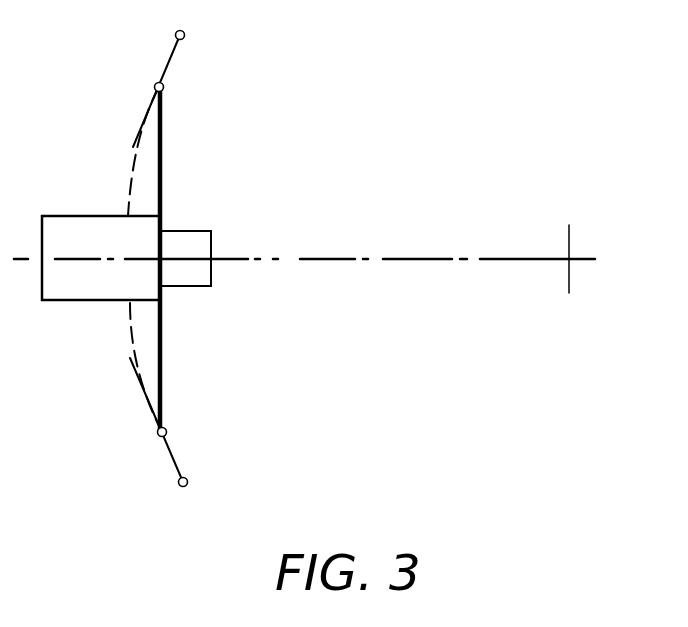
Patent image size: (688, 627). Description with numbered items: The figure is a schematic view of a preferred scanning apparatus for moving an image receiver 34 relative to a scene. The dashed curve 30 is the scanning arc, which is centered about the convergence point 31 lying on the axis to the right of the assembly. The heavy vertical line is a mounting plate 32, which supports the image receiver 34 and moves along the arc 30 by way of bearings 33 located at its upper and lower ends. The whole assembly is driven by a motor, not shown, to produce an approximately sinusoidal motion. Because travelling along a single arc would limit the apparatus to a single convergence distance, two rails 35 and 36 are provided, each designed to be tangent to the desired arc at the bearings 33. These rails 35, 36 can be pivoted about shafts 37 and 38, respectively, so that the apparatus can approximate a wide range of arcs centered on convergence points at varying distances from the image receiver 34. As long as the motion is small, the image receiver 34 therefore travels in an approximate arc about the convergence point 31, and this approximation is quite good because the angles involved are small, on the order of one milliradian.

The scanning arc 30 is at (132, 314).
The convergence point 31 is at (571, 260).
The mounting plate 32 is at (163, 330).
The bearings 33 is at (163, 88).
The image receiver 34 is at (87, 228).
The rail 35 is at (170, 63).
The rail 36 is at (170, 456).
The shaft 37 is at (185, 36).
The shaft 38 is at (188, 482).